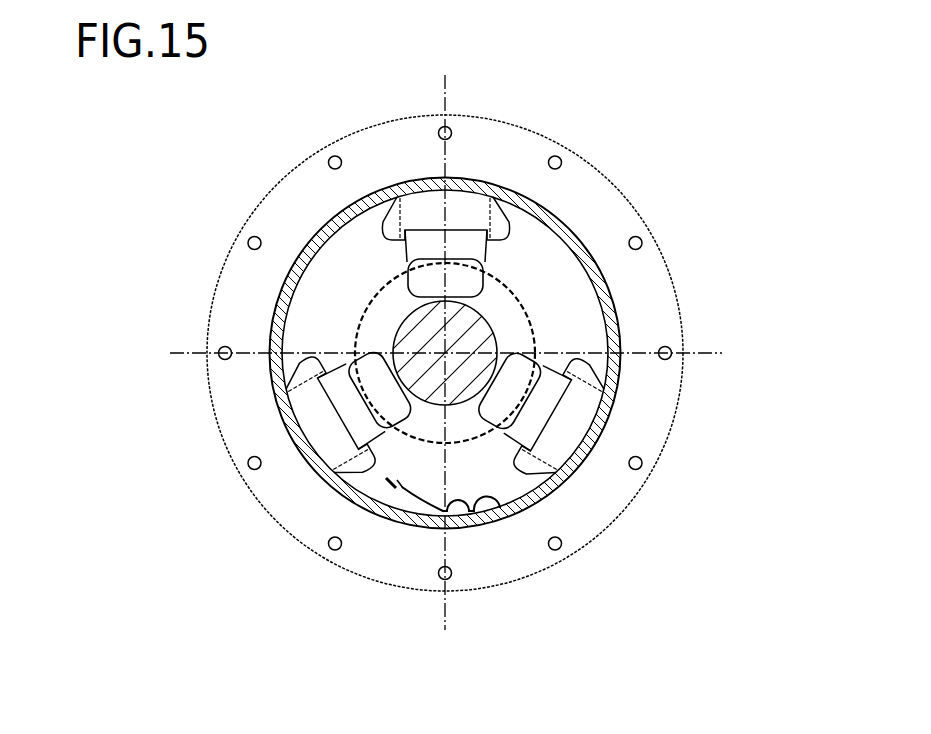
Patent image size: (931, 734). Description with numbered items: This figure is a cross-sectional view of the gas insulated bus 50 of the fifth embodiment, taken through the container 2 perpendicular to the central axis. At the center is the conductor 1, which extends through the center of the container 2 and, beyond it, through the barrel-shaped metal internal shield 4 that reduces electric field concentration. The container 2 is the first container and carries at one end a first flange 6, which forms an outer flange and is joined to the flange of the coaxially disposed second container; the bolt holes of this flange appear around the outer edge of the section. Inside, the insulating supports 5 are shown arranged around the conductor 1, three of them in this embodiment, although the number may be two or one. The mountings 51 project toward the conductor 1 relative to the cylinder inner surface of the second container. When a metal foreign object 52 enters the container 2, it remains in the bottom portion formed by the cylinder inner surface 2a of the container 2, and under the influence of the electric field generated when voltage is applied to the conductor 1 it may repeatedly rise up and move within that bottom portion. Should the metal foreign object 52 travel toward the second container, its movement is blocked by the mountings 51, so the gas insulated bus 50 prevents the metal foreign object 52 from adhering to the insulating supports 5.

The conductor 1 is at (445, 472).
The container 2 is at (465, 321).
The cylinder inner surface 2a is at (289, 299).
The internal shield 4 is at (445, 457).
The insulating supports 5 is at (416, 447).
The first flange 6 is at (399, 353).
The gas insulated bus 50 is at (577, 86).
The mountings 51 is at (466, 373).
The metal foreign object 52 is at (417, 584).